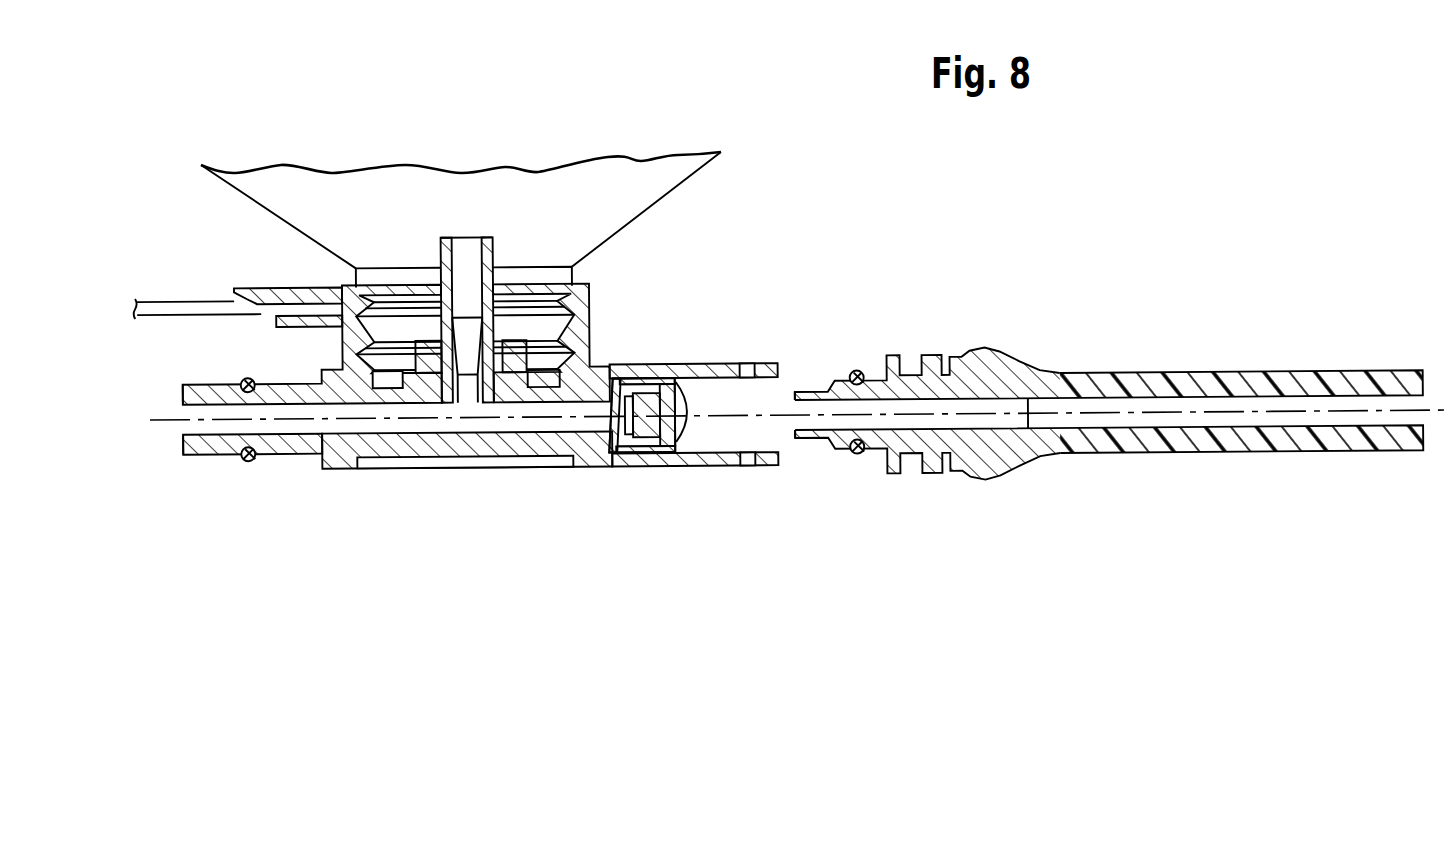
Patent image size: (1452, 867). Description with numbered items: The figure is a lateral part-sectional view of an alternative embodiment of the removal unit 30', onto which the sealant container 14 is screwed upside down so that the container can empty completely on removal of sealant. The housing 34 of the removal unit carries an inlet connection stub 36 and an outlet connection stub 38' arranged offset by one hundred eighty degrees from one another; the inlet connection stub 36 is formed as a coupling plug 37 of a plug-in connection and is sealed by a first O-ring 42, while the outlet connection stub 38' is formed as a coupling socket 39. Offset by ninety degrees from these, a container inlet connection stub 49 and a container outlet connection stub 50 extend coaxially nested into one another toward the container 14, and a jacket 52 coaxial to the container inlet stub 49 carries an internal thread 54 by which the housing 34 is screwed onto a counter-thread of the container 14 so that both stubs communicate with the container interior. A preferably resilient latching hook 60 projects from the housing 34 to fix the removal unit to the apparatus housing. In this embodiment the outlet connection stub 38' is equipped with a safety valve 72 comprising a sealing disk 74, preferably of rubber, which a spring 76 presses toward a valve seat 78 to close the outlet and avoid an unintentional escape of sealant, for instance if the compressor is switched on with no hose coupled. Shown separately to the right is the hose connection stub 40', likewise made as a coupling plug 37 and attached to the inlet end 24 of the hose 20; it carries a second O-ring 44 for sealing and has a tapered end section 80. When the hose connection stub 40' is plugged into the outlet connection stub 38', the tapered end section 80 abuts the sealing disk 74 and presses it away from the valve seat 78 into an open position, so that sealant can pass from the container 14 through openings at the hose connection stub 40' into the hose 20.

The container 14 is at (307, 191).
The hose 20 is at (1190, 376).
The inlet end 24 is at (938, 346).
The removal unit 30' is at (397, 433).
The housing 34 is at (555, 460).
The inlet connection stub 36 is at (302, 456).
The coupling plug 37 is at (200, 458).
The outlet connection stub 38' is at (646, 470).
The coupling socket 39 is at (723, 366).
The hose connection stub 40' is at (865, 329).
The first O-ring 42 is at (248, 462).
The second O-ring 44 is at (855, 461).
The container inlet connection stub 49 is at (492, 253).
The container outlet connection stub 50 is at (514, 350).
The jacket 52 is at (590, 289).
The internal thread 54 is at (373, 327).
The latching hook 60 is at (257, 286).
The safety valve 72 is at (630, 470).
The sealing disk 74 is at (677, 369).
The spring 76 is at (617, 371).
The valve seat 78 is at (695, 469).
The tapered end section 80 is at (810, 446).